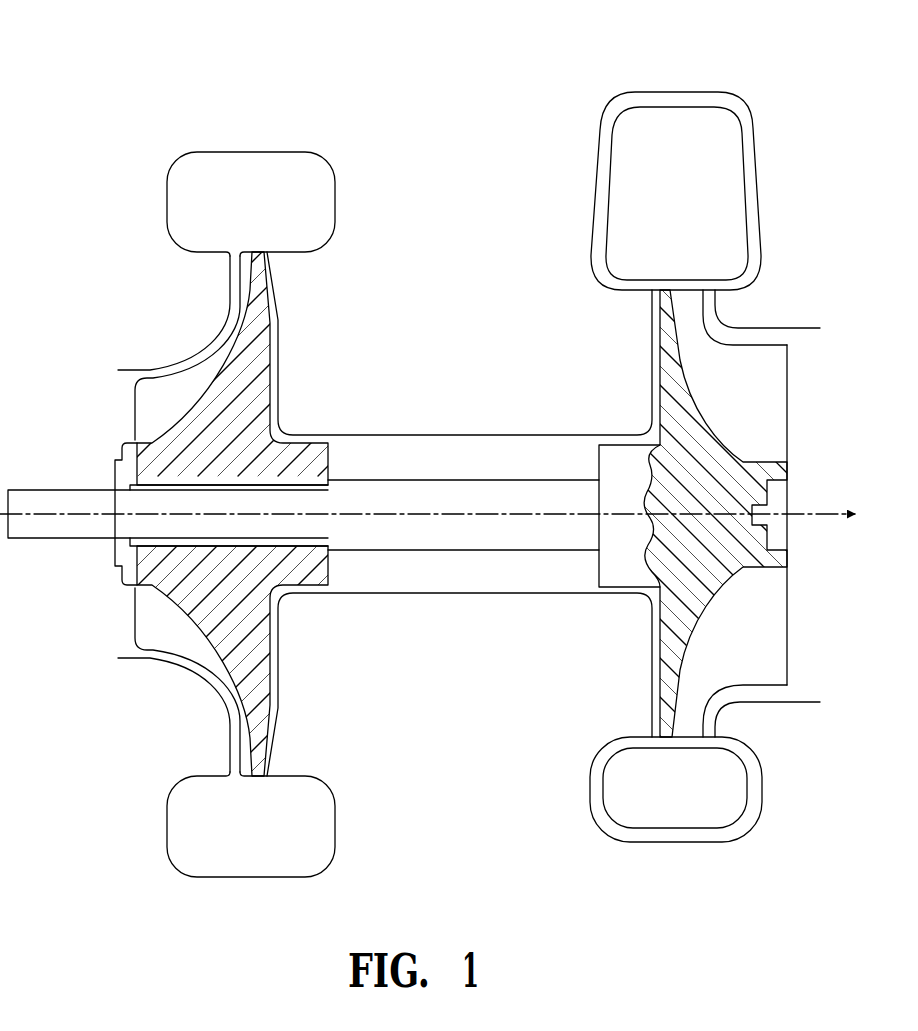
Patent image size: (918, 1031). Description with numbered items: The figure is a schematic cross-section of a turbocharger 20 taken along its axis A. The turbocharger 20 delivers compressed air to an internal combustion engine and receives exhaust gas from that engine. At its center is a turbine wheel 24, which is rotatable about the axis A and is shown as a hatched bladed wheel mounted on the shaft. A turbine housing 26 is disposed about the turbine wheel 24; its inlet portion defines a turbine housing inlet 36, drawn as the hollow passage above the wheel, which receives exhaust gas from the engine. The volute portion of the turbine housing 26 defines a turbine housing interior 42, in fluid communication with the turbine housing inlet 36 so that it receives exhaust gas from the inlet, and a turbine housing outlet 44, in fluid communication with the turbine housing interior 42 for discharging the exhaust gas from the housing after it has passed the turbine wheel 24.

The turbocharger 20 is at (128, 115).
The turbine wheel 24 is at (708, 460).
The turbine housing 26 is at (758, 168).
The turbine housing inlet 36 is at (688, 150).
The turbine housing interior 42 is at (762, 692).
The turbine housing outlet 44 is at (815, 560).